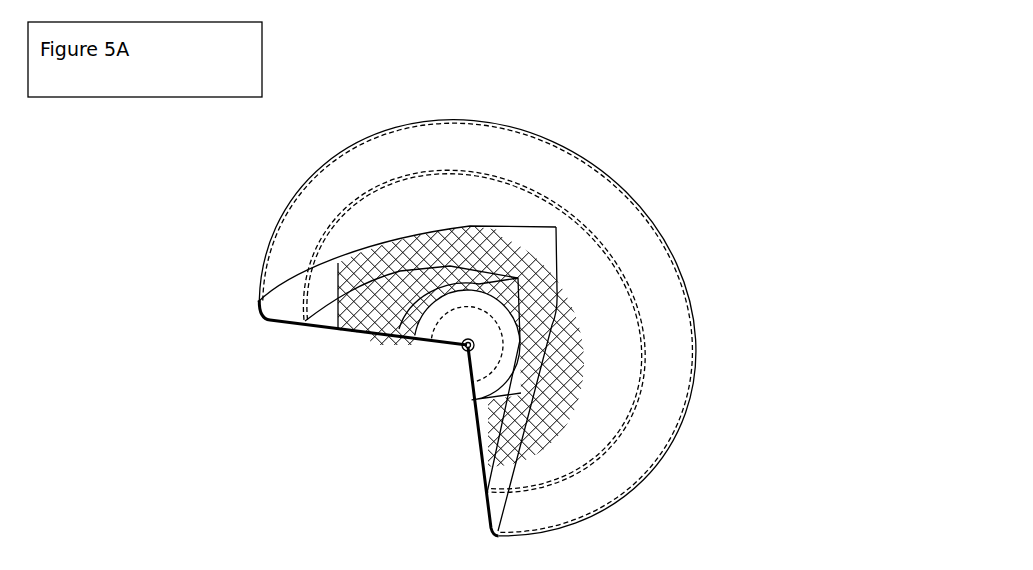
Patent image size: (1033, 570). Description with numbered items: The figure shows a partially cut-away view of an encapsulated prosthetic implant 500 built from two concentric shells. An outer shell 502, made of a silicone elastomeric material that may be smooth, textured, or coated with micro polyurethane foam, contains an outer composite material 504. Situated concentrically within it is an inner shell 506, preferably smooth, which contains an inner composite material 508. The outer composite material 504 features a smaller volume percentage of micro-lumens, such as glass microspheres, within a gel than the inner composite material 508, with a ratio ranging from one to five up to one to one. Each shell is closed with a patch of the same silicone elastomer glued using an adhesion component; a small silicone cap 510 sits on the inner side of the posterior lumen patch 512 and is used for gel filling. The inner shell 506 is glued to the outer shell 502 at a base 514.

The encapsulated prosthetic implant 500 is at (497, 72).
The outer shell 502 is at (612, 175).
The outer composite material 504 is at (458, 146).
The inner shell 506 is at (625, 430).
The inner composite material 508 is at (622, 362).
The silicone cap 510 is at (467, 347).
The posterior lumen patch 512 is at (468, 352).
The base 514 is at (367, 328).